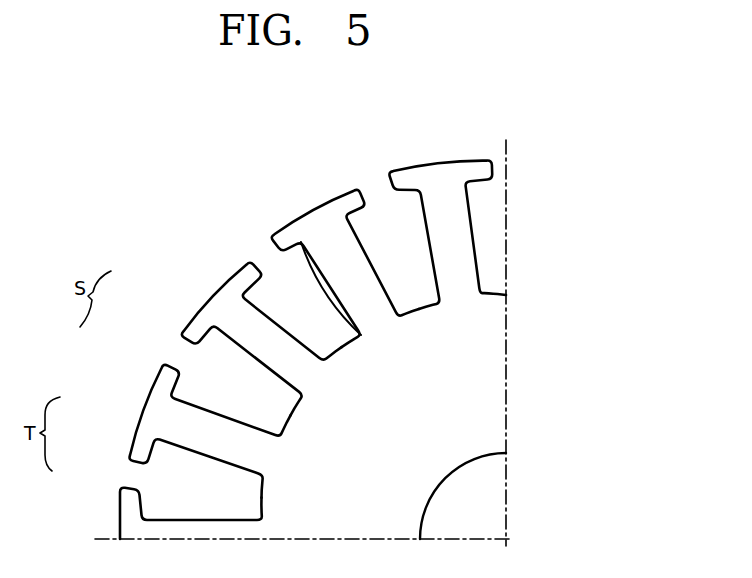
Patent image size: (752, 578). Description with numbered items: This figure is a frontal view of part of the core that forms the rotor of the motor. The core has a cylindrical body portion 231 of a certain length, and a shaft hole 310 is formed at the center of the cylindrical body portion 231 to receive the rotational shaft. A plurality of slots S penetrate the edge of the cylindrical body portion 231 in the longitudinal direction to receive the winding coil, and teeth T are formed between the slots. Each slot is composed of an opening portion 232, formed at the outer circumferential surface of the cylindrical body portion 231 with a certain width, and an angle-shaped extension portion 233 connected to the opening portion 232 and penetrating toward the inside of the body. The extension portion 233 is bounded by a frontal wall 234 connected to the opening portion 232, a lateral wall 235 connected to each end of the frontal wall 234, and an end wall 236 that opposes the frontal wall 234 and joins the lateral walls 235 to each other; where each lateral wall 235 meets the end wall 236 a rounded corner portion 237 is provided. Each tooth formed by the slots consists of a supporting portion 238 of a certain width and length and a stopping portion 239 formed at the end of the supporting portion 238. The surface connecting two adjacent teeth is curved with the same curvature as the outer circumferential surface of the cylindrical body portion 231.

The cylindrical body portion 231 is at (323, 332).
The opening portion 232 is at (179, 407).
The extension portion 233 is at (237, 314).
The frontal wall 234 is at (265, 240).
The lateral wall 235 is at (301, 244).
The end wall 236 is at (361, 340).
The rounded corner portion 237 is at (333, 322).
The supporting portion 238 is at (215, 452).
The stopping portion 239 is at (143, 427).
The shaft hole 310 is at (447, 480).